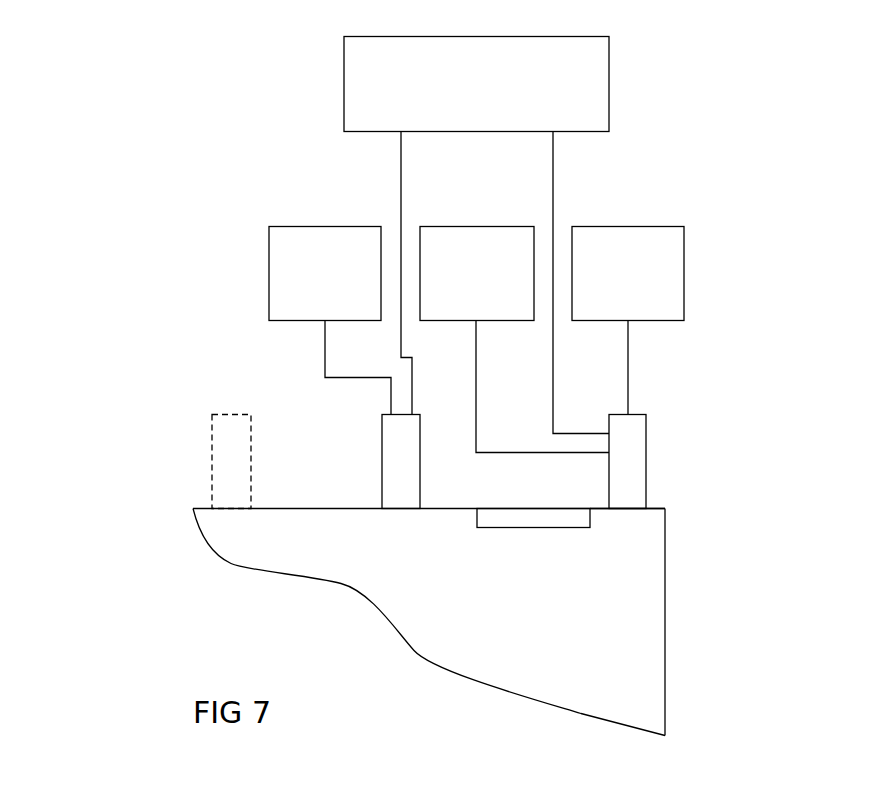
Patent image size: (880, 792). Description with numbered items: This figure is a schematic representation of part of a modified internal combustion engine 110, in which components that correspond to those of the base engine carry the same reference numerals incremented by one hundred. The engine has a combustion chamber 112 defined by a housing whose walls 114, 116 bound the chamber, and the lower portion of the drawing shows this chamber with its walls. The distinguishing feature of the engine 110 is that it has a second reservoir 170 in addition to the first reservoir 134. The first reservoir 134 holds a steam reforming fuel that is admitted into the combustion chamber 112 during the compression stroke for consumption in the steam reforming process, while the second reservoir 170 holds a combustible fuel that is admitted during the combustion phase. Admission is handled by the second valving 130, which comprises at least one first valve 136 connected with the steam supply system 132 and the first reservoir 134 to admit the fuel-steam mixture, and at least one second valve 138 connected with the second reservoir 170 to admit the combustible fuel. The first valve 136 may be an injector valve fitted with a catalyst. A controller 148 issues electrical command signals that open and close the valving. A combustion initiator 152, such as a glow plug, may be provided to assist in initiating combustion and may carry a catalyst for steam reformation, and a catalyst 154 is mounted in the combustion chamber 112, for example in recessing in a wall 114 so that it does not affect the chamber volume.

The internal combustion engine 110 is at (175, 283).
The combustion chamber 112 is at (533, 543).
The wall 114 is at (207, 508).
The wall 116 is at (665, 600).
The second valving 130 is at (647, 393).
The steam supply system 132 is at (628, 321).
The first reservoir 134 is at (514, 340).
The first valve 136 is at (645, 472).
The second valve 138 is at (381, 449).
The controller 148 is at (476, 235).
The combustion initiator 152 is at (211, 458).
The catalyst 154 is at (589, 510).
The second reservoir 170 is at (330, 321).